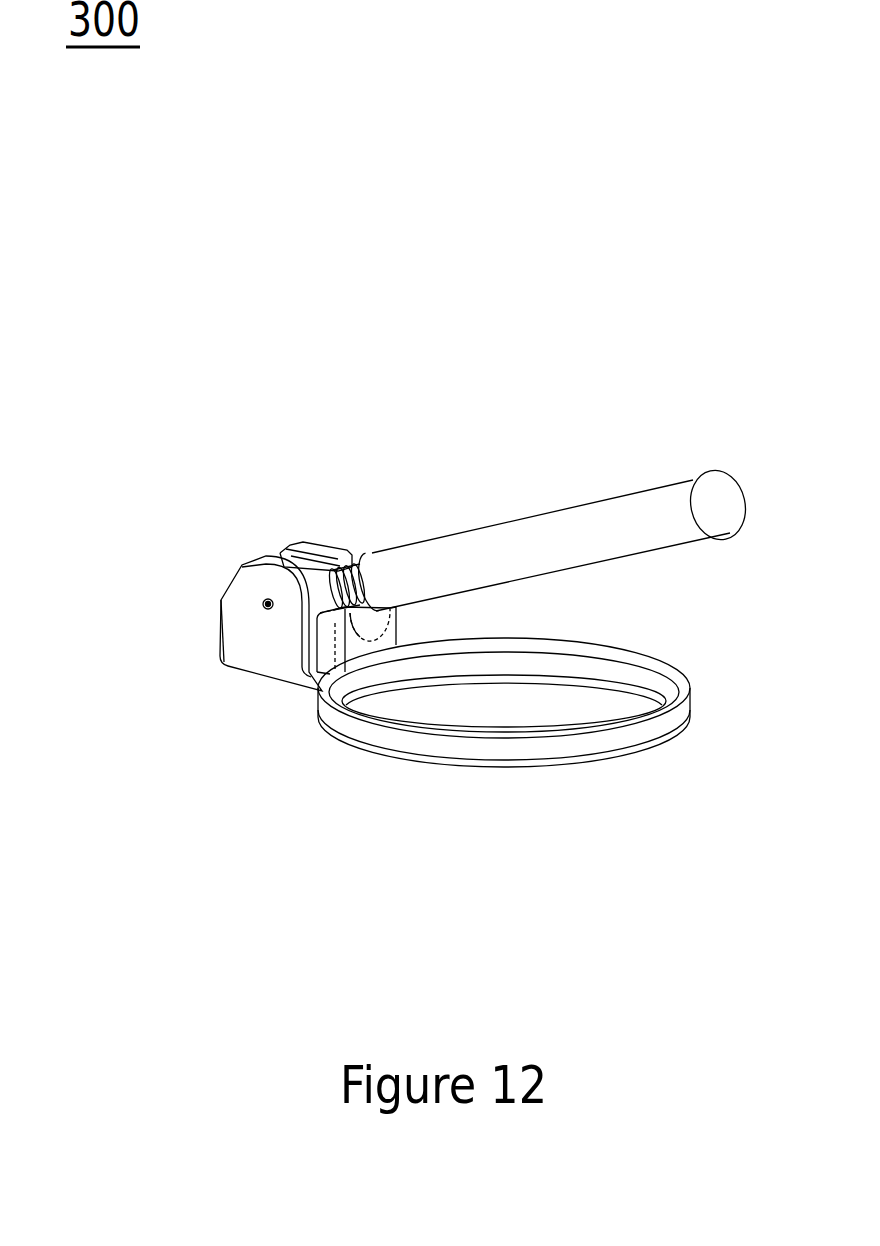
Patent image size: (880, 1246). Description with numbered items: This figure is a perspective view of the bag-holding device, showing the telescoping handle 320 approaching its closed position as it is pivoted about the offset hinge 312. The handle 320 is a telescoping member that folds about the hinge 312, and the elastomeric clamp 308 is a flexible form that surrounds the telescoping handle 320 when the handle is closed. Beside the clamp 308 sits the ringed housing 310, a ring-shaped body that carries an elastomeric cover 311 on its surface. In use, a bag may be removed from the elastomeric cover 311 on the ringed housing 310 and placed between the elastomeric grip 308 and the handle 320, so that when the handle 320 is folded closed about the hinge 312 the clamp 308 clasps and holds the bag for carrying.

The telescoping handle 320 is at (594, 512).
The offset hinge 312 is at (265, 599).
The elastomeric clamp 308 is at (322, 645).
The ringed housing 310 is at (518, 770).
The elastomeric cover 311 is at (340, 707).